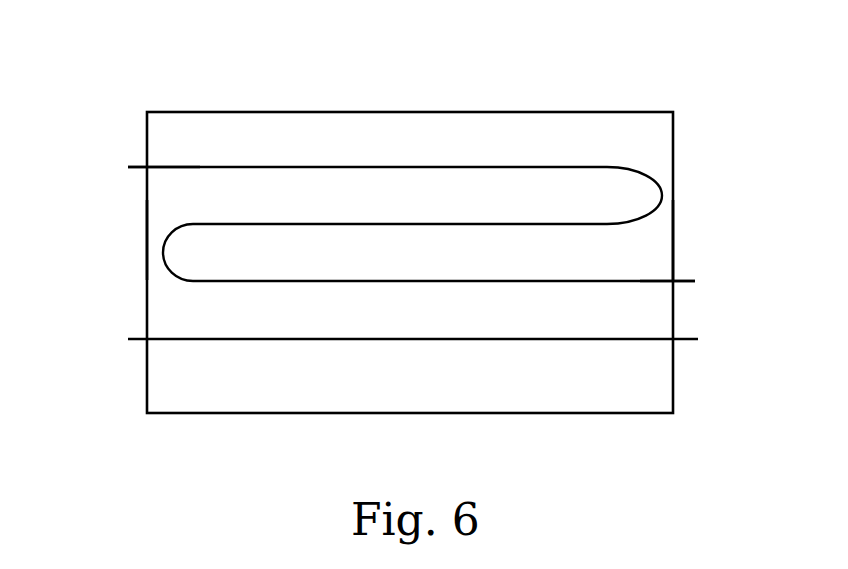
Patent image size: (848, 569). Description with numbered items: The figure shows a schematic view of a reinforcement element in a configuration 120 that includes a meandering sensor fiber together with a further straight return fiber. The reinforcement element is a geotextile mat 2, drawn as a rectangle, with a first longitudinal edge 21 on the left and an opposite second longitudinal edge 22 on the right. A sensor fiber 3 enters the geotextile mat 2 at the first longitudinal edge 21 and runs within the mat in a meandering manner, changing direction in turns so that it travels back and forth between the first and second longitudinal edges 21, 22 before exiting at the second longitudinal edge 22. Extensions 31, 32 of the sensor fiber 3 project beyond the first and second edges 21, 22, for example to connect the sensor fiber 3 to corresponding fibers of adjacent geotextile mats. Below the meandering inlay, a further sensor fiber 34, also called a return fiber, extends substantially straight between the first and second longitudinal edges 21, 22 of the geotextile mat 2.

The configuration 120 is at (188, 57).
The geotextile mat 2 is at (583, 112).
The sensor fiber 3 is at (385, 165).
The first longitudinal edge 21 is at (130, 235).
The second longitudinal edge 22 is at (690, 236).
The extension of the sensor fiber 31 is at (140, 163).
The extension of the sensor fiber 32 is at (695, 282).
The further sensor fiber 34 is at (205, 339).